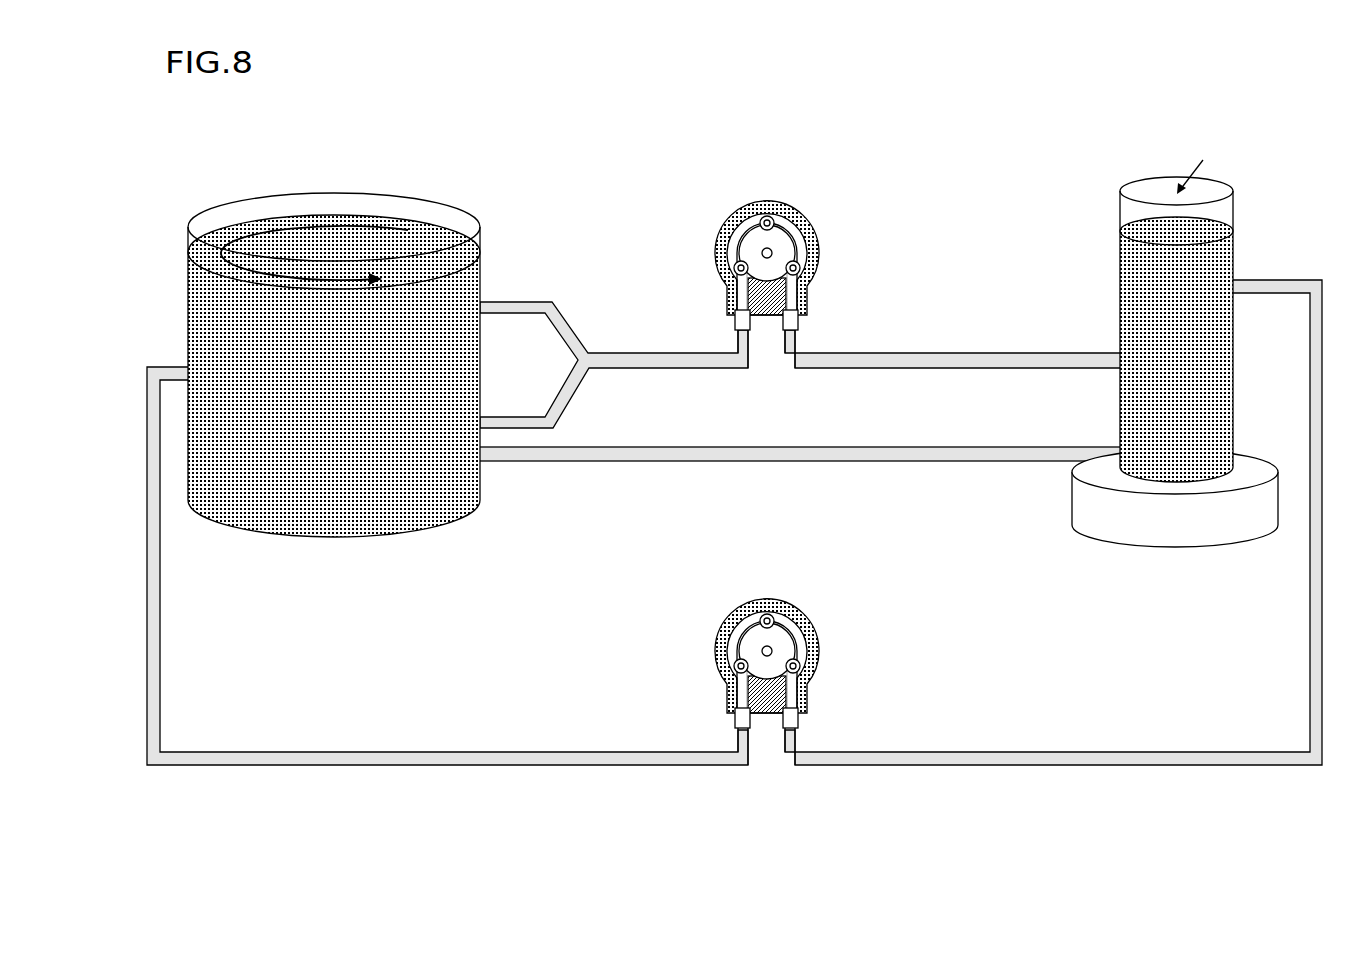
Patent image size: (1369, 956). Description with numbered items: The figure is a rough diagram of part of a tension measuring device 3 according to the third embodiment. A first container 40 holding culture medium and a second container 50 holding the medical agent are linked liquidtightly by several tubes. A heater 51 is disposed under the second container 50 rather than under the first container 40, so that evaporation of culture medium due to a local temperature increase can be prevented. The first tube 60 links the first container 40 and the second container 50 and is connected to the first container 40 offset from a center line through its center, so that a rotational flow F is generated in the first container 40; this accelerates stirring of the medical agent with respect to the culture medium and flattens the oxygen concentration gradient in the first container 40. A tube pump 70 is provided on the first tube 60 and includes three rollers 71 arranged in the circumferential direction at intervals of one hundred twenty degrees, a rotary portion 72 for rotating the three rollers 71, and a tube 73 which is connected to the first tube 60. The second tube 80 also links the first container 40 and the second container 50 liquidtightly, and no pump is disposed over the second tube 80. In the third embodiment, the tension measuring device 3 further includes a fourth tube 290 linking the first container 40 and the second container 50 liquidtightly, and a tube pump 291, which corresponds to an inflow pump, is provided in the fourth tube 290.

The tension measuring device 3 is at (889, 152).
The first container 40 is at (334, 538).
The rotational flow F is at (333, 216).
The second container 50 is at (1236, 344).
The heater 51 is at (1191, 548).
The first tube 60 is at (962, 352).
The tube pump 70 is at (806, 212).
The rollers 71 is at (768, 214).
The rotary portion 72 is at (736, 225).
The tube 73 is at (812, 246).
The second tube 80 is at (646, 463).
The fourth tube 290 is at (1040, 767).
The tube pump 291 is at (810, 616).